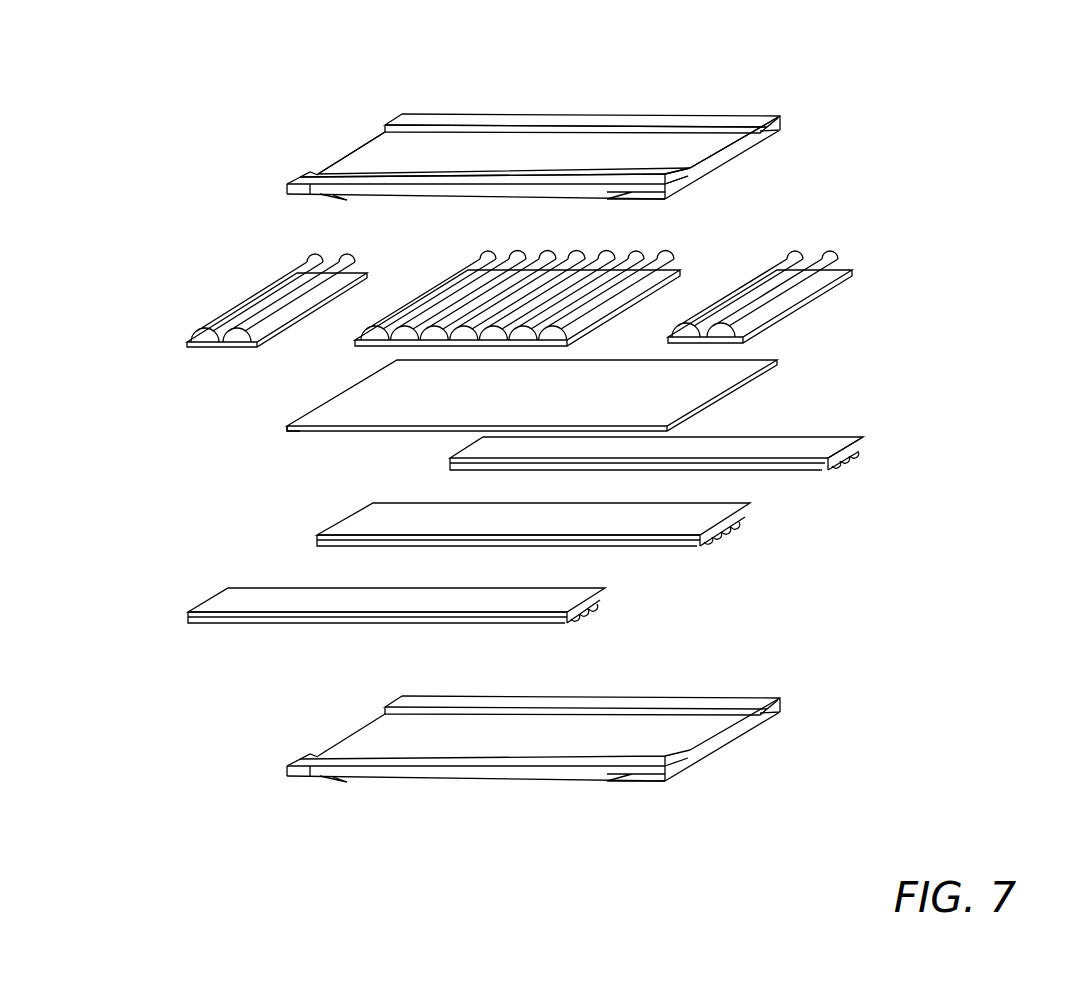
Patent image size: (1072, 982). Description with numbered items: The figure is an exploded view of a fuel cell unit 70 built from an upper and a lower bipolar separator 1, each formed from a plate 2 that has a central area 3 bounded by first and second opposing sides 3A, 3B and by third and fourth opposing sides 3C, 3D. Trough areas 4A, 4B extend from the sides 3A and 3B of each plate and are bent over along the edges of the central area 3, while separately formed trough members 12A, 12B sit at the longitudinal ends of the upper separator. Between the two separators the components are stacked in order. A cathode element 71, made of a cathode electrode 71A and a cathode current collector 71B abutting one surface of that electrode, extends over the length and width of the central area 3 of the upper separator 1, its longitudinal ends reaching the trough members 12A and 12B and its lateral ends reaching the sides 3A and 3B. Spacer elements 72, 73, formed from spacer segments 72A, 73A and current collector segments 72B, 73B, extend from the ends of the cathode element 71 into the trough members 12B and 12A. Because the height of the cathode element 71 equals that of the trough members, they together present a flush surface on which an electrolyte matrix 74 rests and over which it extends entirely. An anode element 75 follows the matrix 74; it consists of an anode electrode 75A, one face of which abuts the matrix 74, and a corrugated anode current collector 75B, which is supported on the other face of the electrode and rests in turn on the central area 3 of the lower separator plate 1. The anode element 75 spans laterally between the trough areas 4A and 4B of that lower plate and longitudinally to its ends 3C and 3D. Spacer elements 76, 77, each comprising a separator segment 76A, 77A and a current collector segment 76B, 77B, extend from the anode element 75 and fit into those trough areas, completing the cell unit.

The bipolar separator 1 is at (800, 143).
The plate 2 is at (548, 773).
The central area 3 is at (468, 146).
The first side of central area 3A is at (385, 186).
The second side of central area 3B is at (525, 122).
The third side of central area 3C is at (720, 138).
The fourth side of central area 3D is at (410, 146).
The trough area 4A is at (478, 180).
The trough area 4B is at (664, 129).
The trough member 12A is at (737, 140).
The trough member 12B is at (300, 193).
The fuel cell unit 70 is at (795, 383).
The cathode element 71 is at (325, 355).
The cathode electrode 71A is at (678, 268).
The cathode current collector 71B is at (560, 266).
The spacer element 72 is at (225, 285).
The spacer segment 72A is at (192, 342).
The current collector segment 72B is at (283, 293).
The spacer element 73 is at (875, 248).
The spacer segment 73A is at (858, 272).
The current collector segment 73B is at (792, 288).
The electrolyte matrix 74 is at (290, 430).
The anode element 75 is at (785, 518).
The anode electrode 75A is at (658, 522).
The anode current collector 75B is at (728, 526).
The spacer element 76 is at (190, 582).
The separator segment 76A is at (552, 610).
The current collector segment 76B is at (605, 594).
The spacer element 77 is at (900, 440).
The separator segment 77A is at (827, 440).
The current collector segment 77B is at (848, 456).